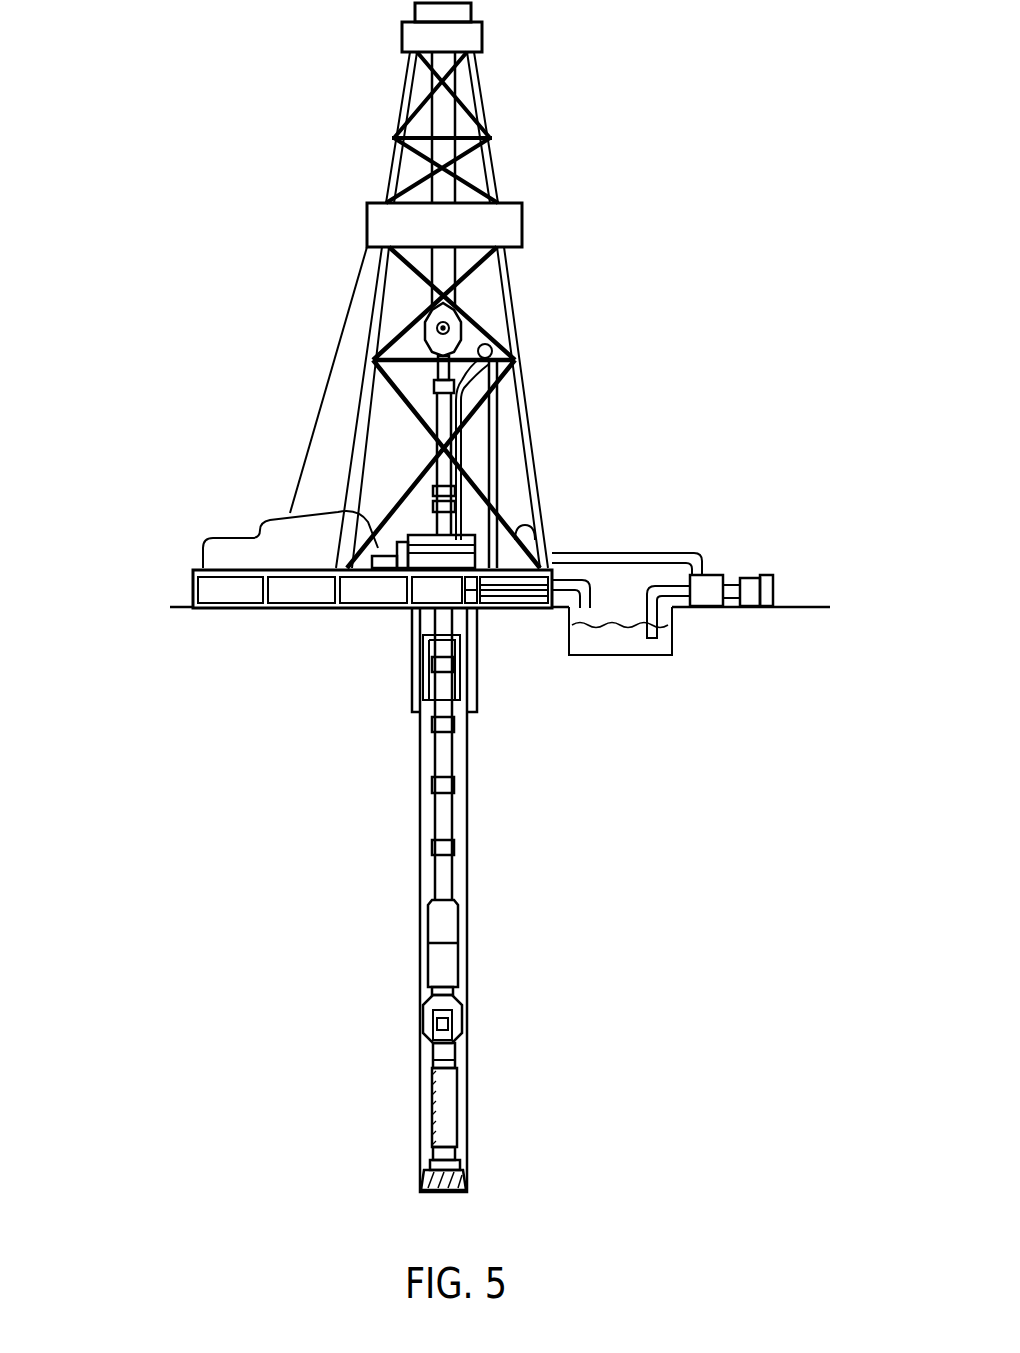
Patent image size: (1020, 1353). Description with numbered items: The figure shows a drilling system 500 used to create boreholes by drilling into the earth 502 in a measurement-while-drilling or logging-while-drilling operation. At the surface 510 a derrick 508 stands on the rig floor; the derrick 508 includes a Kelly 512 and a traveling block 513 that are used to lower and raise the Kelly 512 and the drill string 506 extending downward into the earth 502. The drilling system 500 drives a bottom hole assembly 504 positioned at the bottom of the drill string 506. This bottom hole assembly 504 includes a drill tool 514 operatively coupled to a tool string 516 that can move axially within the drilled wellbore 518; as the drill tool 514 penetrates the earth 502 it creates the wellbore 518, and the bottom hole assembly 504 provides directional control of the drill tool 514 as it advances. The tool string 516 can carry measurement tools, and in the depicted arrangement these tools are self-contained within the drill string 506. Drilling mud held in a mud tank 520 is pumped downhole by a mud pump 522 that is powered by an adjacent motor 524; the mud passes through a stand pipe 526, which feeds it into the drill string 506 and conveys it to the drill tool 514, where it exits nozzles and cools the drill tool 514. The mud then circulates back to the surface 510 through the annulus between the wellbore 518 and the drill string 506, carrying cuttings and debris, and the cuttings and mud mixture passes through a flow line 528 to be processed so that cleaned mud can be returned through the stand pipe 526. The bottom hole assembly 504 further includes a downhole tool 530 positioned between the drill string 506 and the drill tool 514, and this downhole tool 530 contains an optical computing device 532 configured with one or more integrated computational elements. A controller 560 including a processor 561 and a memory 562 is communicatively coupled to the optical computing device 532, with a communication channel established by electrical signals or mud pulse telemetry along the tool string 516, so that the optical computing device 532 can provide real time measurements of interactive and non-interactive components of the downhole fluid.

The drilling system 500 is at (657, 214).
The earth 502 is at (237, 694).
The bottom hole assembly 504 is at (343, 1012).
The drill string 506 is at (445, 807).
The derrick 508 is at (372, 332).
The surface 510 is at (306, 591).
The Kelly 512 is at (440, 407).
The traveling block 513 is at (462, 328).
The drill tool 514 is at (470, 1183).
The tool string 516 is at (445, 1092).
The wellbore 518 is at (420, 753).
The mud tank 520 is at (608, 657).
The mud pump 522 is at (713, 575).
The motor 524 is at (775, 595).
The stand pipe 526 is at (497, 453).
The flow line 528 is at (595, 593).
The downhole tool 530 is at (443, 1053).
The optical computing device 532 is at (452, 1014).
The controller 560 is at (193, 560).
The processor 561 is at (250, 602).
The memory 562 is at (320, 602).